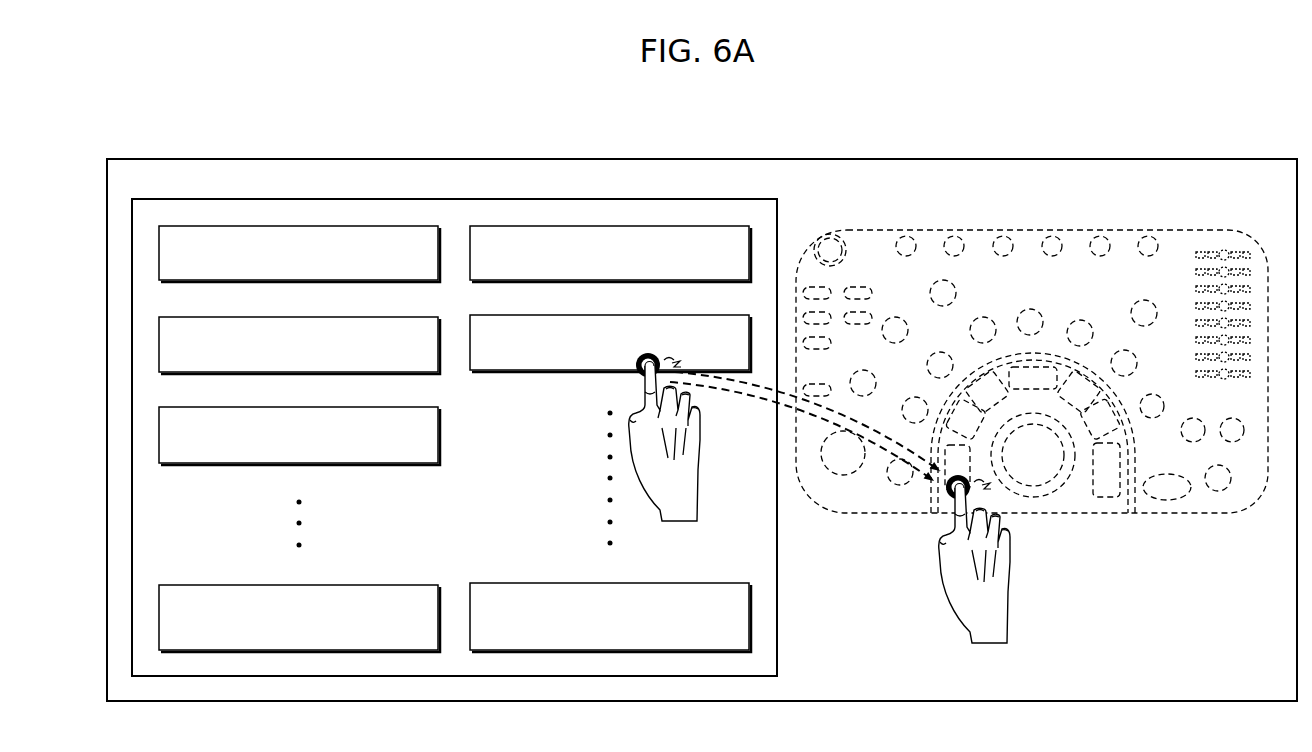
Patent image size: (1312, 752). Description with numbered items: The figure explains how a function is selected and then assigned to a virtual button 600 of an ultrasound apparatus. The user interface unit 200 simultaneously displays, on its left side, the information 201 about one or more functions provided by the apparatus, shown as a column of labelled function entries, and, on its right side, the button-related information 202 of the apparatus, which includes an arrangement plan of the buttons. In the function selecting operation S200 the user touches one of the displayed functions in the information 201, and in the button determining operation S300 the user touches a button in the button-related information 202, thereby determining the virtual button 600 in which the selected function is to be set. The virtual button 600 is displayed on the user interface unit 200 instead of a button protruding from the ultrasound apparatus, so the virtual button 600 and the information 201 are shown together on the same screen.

The user interface unit 200 is at (830, 158).
The information about one or more functions 201 is at (463, 197).
The button-related information 202 is at (1030, 233).
The function selecting operation S200 is at (636, 368).
The button determining operation S300 is at (977, 489).
The virtual button 600 is at (965, 464).